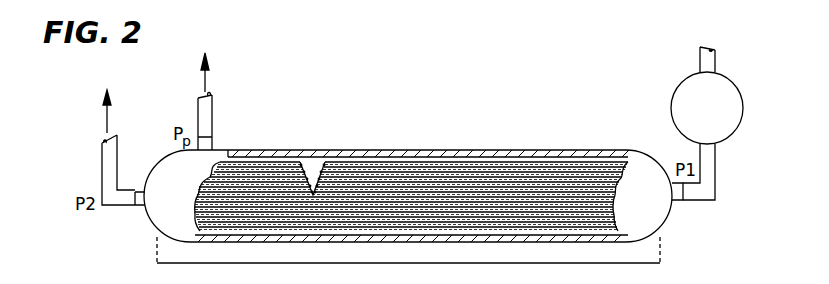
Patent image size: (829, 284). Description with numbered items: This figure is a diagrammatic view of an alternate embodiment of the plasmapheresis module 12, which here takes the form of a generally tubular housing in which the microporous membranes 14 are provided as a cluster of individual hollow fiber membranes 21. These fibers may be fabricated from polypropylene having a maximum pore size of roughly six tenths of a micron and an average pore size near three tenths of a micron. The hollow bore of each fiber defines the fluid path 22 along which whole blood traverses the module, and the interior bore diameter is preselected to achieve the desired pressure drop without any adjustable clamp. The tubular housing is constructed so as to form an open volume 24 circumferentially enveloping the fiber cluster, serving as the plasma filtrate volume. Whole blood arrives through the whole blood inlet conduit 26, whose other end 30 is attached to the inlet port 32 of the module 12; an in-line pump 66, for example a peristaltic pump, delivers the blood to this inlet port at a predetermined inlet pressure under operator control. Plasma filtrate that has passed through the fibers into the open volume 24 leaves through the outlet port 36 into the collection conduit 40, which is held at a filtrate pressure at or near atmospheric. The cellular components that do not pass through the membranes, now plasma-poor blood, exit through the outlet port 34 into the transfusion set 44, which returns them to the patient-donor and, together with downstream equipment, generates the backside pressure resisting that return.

The module 12 is at (575, 134).
The microporous membranes 14 is at (405, 157).
The hollow fiber membranes 21 is at (453, 184).
The fluid path 22 is at (315, 178).
The open volume 24 is at (538, 158).
The whole blood inlet conduit 26 is at (716, 62).
The other end of the conduit 30 is at (700, 197).
The inlet port 32 is at (676, 205).
The outlet port 34 is at (140, 206).
The outlet port 36 is at (212, 143).
The collection conduit 40 is at (212, 113).
The transfusion set 44 is at (108, 163).
The in-line pump 66 is at (722, 125).